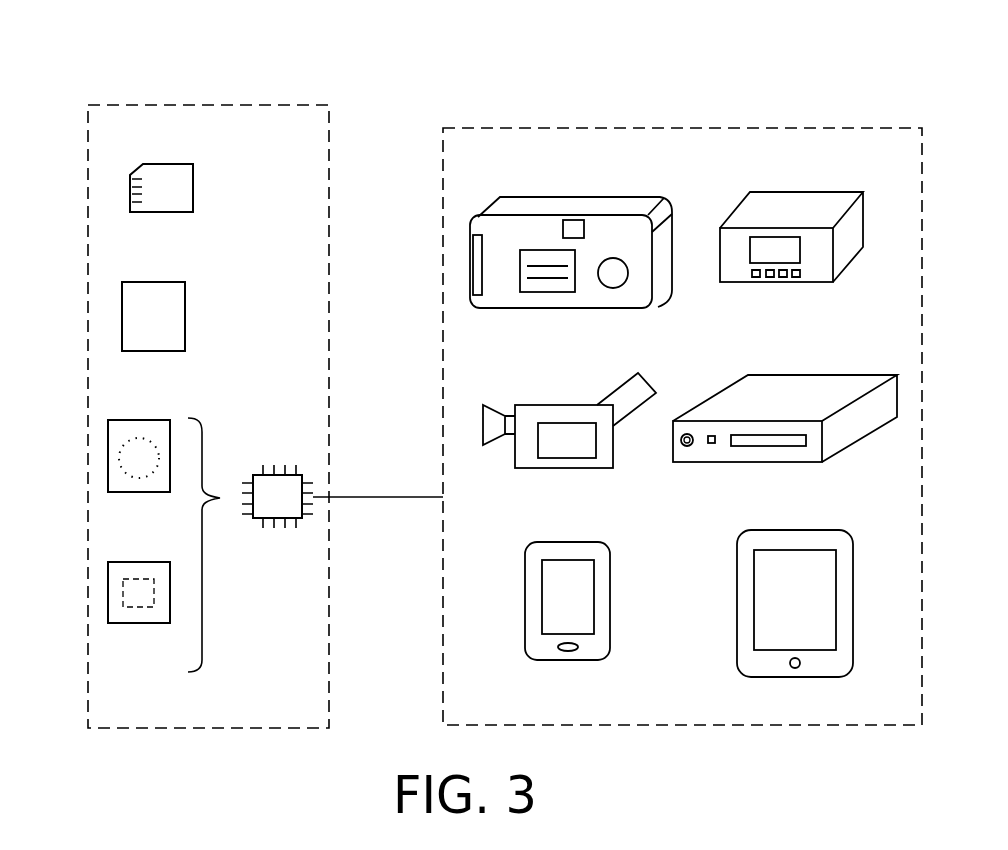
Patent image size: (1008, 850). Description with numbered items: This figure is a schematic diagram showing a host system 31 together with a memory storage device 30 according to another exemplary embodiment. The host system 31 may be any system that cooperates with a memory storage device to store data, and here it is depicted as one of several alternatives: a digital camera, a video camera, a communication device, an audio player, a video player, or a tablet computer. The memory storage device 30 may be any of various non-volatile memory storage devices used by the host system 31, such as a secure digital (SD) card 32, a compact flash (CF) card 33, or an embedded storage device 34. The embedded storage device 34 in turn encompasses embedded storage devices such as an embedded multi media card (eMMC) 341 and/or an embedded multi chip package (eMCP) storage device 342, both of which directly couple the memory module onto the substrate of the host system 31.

The memory storage device 30 is at (199, 105).
The host system 31 is at (606, 128).
The secure digital (SD) card 32 is at (130, 193).
The compact flash (CF) card 33 is at (122, 318).
The embedded storage device 34 is at (279, 466).
The embedded multi media card (eMMC) 341 is at (108, 458).
The embedded multi chip package (eMCP) storage device 342 is at (108, 595).